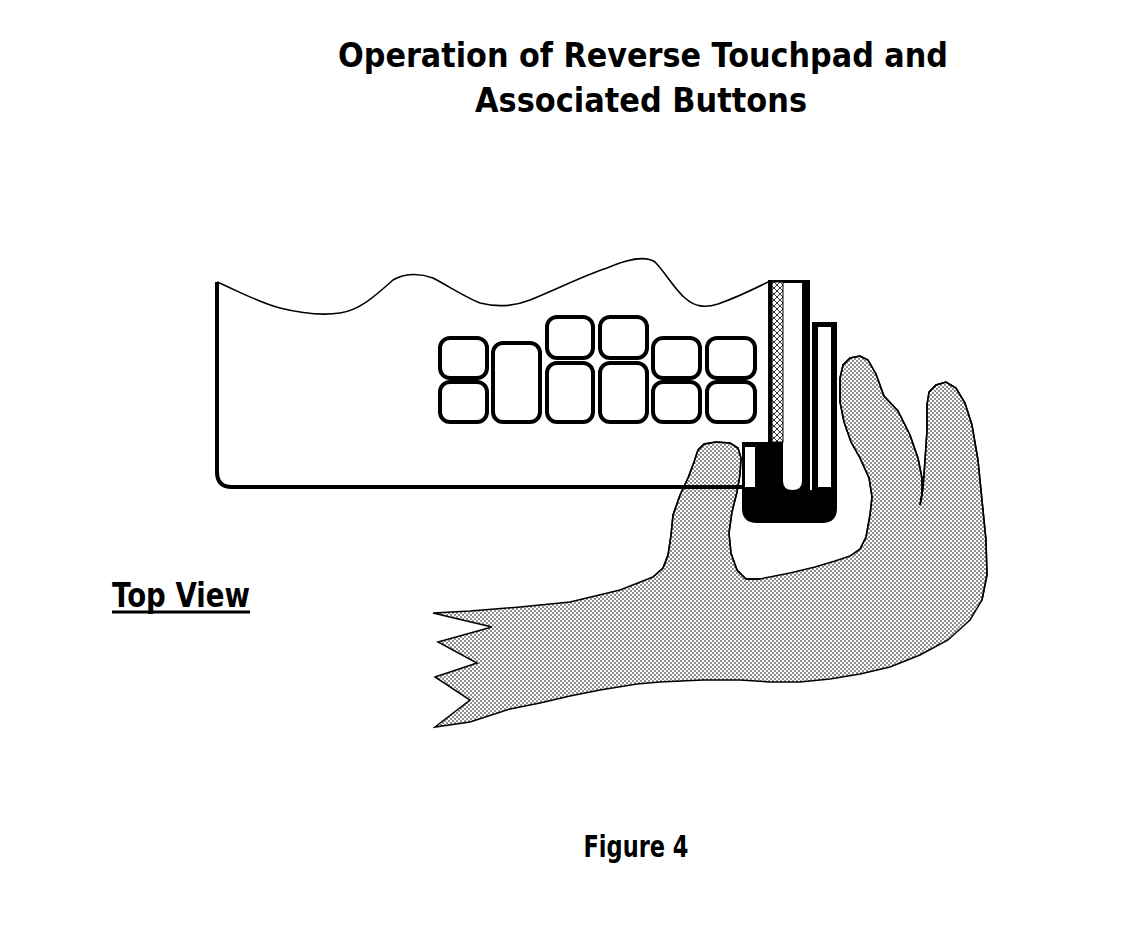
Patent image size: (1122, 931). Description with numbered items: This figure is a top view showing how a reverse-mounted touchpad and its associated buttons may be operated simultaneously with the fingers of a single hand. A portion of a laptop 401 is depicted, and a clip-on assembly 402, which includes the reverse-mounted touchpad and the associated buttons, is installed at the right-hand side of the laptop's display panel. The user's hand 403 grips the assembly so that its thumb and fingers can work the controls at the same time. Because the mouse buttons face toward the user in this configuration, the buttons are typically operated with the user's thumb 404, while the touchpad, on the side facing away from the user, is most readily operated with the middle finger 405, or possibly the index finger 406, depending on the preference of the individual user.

The laptop 401 is at (208, 333).
The clip-on assembly 402 is at (825, 310).
The hand 403 is at (878, 673).
The thumb 404 is at (670, 508).
The middle finger 405 is at (878, 370).
The index finger 406 is at (963, 393).